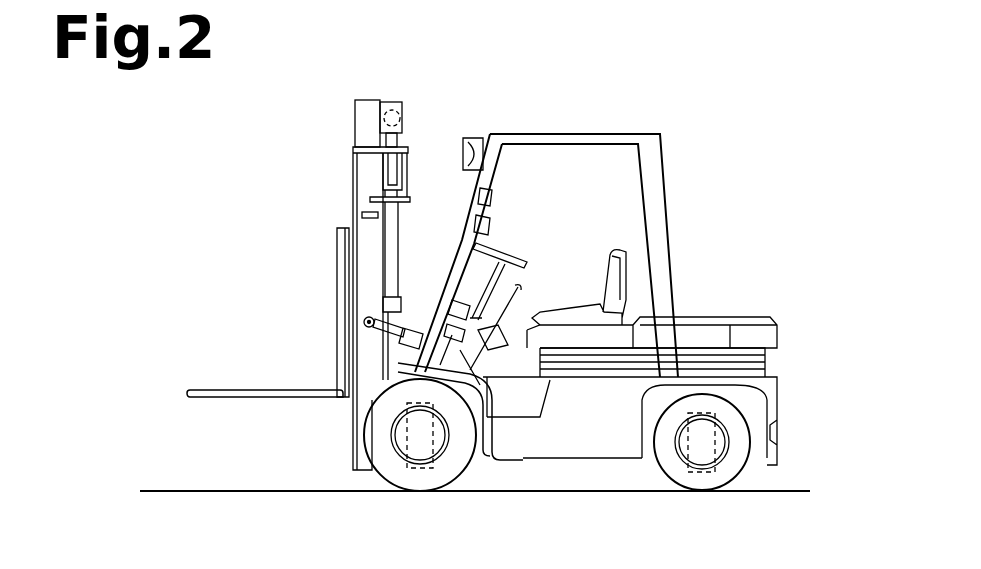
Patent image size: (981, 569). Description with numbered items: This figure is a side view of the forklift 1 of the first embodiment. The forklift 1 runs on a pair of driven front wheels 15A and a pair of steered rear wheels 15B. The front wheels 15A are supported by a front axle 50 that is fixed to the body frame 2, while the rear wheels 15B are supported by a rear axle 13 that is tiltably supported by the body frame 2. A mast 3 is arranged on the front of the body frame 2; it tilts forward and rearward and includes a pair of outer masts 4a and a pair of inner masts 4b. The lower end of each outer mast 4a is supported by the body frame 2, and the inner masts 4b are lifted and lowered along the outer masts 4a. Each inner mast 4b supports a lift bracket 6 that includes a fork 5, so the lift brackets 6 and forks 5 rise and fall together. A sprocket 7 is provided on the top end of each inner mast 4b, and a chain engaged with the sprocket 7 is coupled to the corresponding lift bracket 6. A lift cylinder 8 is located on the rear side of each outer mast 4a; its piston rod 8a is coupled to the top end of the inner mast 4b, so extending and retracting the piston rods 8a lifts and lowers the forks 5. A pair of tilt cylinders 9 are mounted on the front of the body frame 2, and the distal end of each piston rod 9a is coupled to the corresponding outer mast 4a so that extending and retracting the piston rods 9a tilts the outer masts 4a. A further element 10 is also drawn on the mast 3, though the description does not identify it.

The forklift 1 is at (600, 327).
The body frame 2 is at (747, 318).
The mast 3 is at (366, 280).
The outer mast 4a is at (353, 177).
The inner mast 4b is at (355, 110).
The fork 5 is at (232, 390).
The lift bracket 6 is at (337, 272).
The sprocket 7 is at (402, 112).
The lift cylinder 8 is at (398, 235).
The piston rod 8a is at (405, 178).
The tilt cylinder 9 is at (420, 328).
The piston rod 9a is at (364, 322).
The sensor 10 is at (362, 214).
The rear axle 13 is at (727, 448).
The front wheel 15A is at (392, 477).
The rear wheel 15B is at (708, 486).
The front axle 50 is at (433, 447).